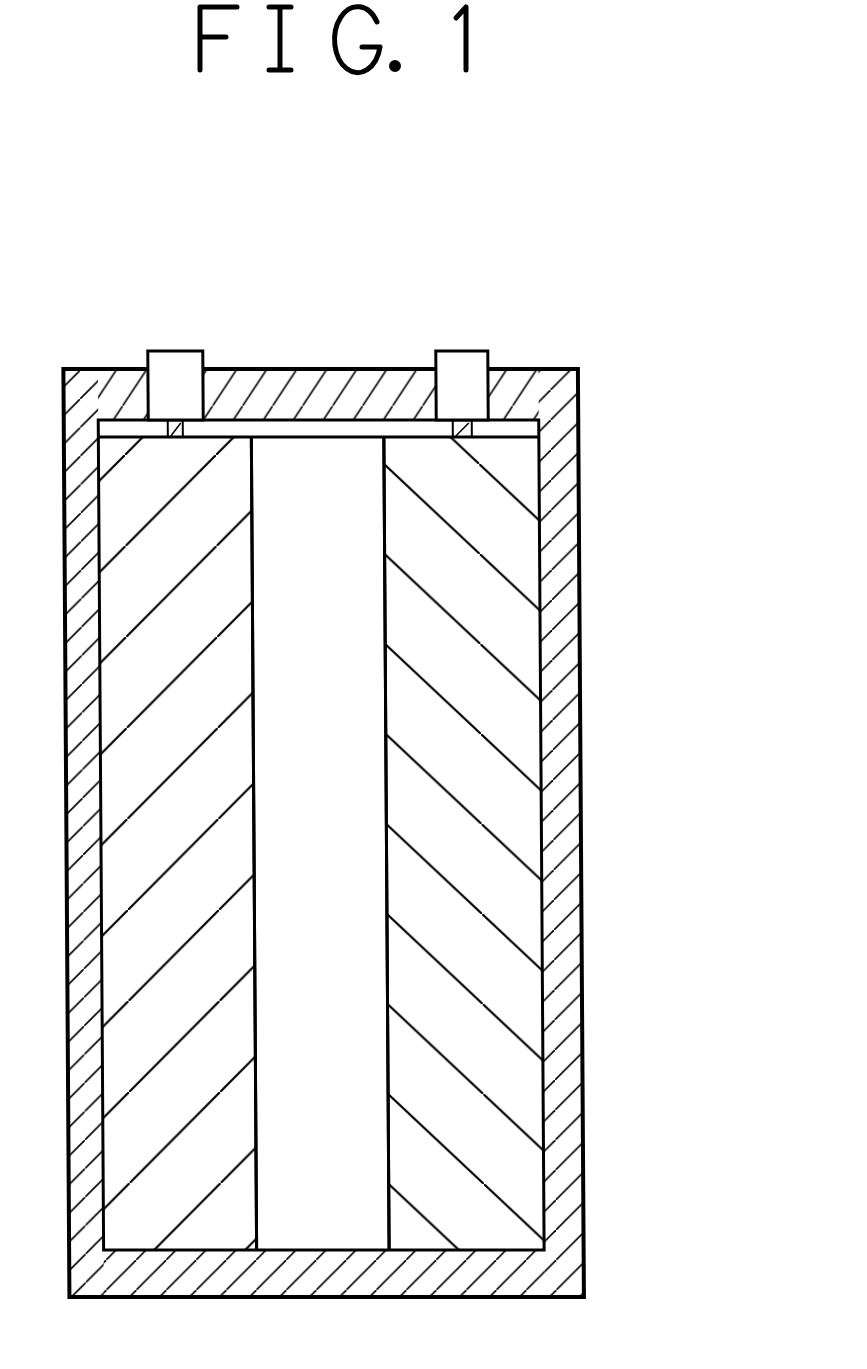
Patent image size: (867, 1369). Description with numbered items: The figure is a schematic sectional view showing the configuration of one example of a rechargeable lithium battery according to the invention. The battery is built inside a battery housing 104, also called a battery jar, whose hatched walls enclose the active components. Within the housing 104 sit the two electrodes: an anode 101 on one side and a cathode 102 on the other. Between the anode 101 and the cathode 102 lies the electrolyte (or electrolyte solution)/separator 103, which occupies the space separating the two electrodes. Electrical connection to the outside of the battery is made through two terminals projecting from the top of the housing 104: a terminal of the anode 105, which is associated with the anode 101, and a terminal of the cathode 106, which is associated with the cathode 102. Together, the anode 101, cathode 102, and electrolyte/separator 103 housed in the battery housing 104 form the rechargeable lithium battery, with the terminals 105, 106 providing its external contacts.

The anode 101 is at (247, 1093).
The cathode 102 is at (512, 627).
The electrolyte/separator 103 is at (350, 785).
The battery housing 104 is at (573, 1237).
The terminal of the anode 105 is at (172, 356).
The terminal of the cathode 106 is at (467, 356).